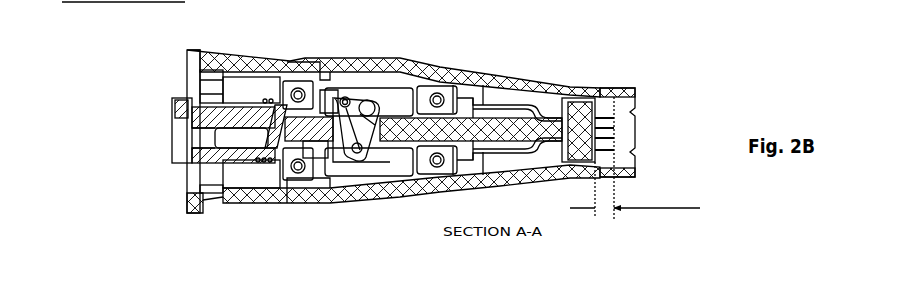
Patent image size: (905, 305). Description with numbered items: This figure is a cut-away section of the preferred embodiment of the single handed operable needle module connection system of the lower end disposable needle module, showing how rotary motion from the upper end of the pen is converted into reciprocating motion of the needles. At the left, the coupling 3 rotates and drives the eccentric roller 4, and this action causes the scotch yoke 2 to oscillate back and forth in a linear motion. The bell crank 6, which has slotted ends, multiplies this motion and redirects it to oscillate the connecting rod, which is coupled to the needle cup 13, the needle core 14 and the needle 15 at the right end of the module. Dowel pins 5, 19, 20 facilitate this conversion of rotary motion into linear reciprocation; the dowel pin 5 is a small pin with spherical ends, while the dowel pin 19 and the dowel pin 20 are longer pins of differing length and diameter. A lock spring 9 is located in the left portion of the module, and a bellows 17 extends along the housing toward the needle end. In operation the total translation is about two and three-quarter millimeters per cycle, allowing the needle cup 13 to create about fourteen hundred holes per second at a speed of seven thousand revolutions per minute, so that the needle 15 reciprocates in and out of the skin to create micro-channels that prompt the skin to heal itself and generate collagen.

The yoke 2 is at (365, 160).
The coupling 3 is at (172, 106).
The roller 4 is at (326, 149).
The dowel pin 5 is at (346, 96).
The bell crank 6 is at (364, 92).
The lock spring 9 is at (262, 98).
The needle cup 13 is at (572, 171).
The needle core 14 is at (596, 94).
The needle 15 is at (618, 108).
The bellows 17 is at (511, 104).
The dowel pin 19 is at (310, 142).
The dowel pin 20 is at (378, 100).